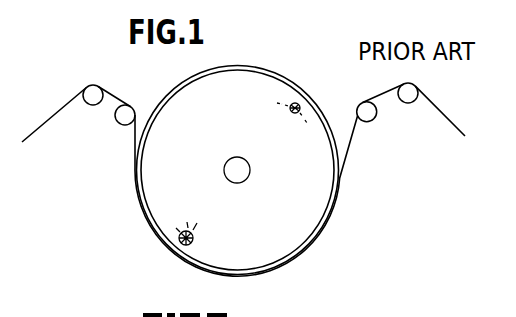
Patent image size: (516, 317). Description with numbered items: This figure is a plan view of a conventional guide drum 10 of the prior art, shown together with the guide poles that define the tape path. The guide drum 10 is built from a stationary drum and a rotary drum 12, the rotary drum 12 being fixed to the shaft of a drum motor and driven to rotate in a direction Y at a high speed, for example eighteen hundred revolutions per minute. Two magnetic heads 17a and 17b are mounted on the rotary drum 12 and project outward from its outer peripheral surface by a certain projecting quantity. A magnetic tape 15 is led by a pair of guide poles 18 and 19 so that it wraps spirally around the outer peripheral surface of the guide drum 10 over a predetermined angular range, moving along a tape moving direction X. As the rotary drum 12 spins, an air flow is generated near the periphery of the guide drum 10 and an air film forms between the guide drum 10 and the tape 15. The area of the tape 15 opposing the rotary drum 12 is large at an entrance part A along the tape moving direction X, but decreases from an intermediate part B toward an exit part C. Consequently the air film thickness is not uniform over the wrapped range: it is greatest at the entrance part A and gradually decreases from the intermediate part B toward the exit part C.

The guide drum 10 is at (270, 70).
The rotary drum 12 is at (280, 92).
The magnetic tape 15 is at (63, 105).
The magnetic head 17a is at (197, 242).
The magnetic head 17b is at (305, 107).
The guide pole 18 is at (116, 115).
The guide pole 19 is at (362, 121).
The entrance part A is at (137, 173).
The intermediate part B is at (240, 274).
The exit part C is at (338, 180).
The tape moving direction X is at (469, 119).
The rotation direction Y is at (271, 104).